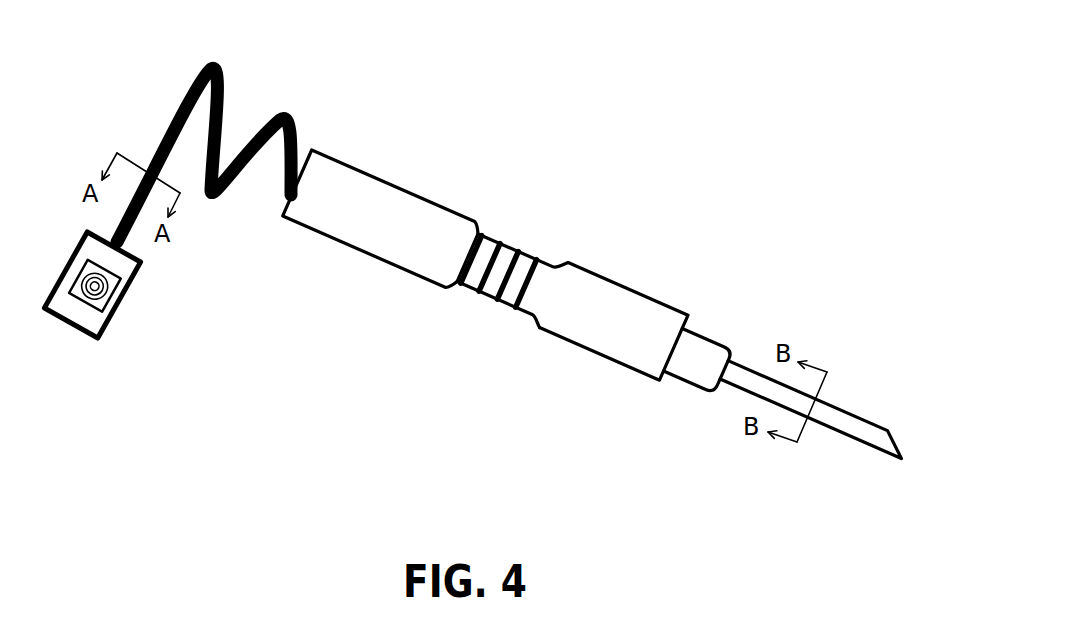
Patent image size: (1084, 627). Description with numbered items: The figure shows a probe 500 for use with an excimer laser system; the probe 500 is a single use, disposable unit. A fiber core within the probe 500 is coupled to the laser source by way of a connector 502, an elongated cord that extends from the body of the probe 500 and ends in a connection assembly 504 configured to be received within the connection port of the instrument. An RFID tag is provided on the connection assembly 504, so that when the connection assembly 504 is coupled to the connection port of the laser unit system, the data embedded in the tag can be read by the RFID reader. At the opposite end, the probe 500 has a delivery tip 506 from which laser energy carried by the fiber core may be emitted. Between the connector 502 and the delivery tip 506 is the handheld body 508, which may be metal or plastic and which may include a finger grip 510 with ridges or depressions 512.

The probe 500 is at (735, 105).
The connector 502 is at (212, 65).
The connection assembly 504 is at (140, 262).
The delivery tip 506 is at (848, 412).
The handheld body 508 is at (602, 270).
The finger grip 510 is at (494, 233).
The ridges or depressions 512 is at (523, 250).